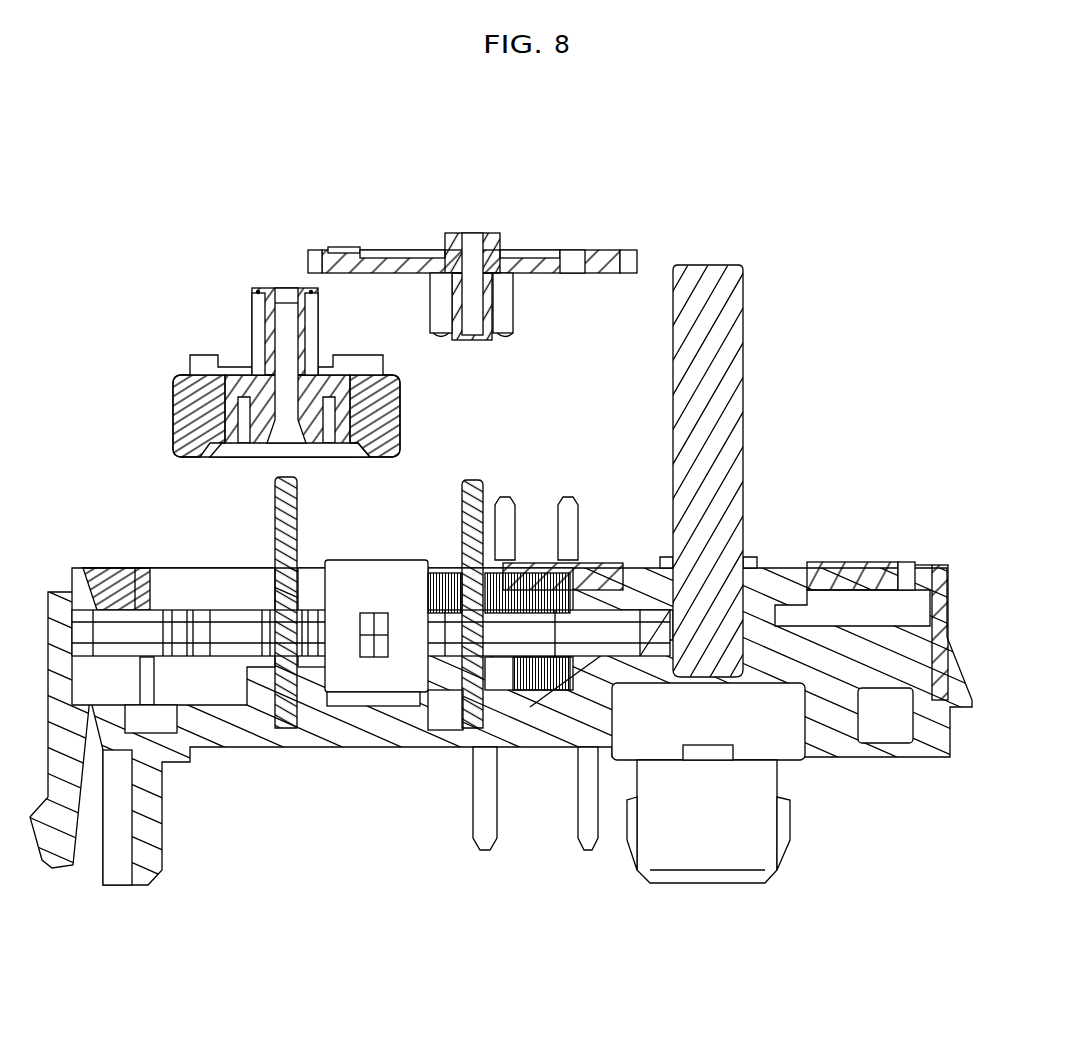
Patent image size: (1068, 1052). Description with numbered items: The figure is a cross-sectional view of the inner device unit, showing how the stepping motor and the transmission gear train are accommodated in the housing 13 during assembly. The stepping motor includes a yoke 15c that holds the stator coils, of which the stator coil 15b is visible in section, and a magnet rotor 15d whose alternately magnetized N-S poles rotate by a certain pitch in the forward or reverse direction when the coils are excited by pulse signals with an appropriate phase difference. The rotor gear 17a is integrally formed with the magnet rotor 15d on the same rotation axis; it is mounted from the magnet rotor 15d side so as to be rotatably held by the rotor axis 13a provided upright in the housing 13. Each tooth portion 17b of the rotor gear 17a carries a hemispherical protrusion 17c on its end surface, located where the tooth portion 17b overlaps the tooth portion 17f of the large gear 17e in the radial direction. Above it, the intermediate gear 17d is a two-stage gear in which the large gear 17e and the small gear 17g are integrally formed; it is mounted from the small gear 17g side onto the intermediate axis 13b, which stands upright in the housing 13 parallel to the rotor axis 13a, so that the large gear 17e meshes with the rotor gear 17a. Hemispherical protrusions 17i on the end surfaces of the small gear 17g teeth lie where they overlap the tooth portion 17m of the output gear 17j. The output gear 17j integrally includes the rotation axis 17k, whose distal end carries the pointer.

The housing 13 is at (940, 672).
The rotor axis 13a is at (282, 528).
The intermediate axis 13b is at (470, 490).
The stator coil 15b is at (370, 595).
The yoke 15c is at (123, 620).
The magnet rotor 15d is at (200, 418).
The rotor gear 17a is at (232, 328).
The tooth portion 17b is at (255, 322).
The hemispherical protrusion 17c is at (258, 290).
The intermediate gear 17d is at (521, 257).
The large gear 17e is at (643, 254).
The tooth portion 17f is at (318, 250).
The small gear 17g is at (428, 303).
The hemispherical protrusion 17i is at (507, 337).
The output gear 17j is at (855, 556).
The rotation axis 17k is at (728, 348).
The tooth portion 17m is at (910, 578).